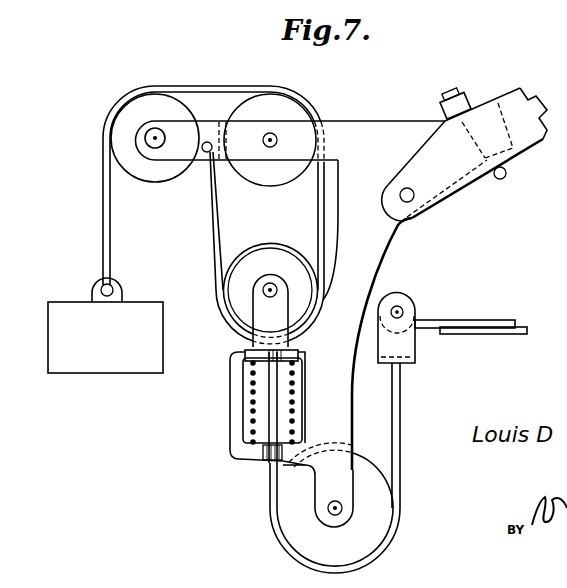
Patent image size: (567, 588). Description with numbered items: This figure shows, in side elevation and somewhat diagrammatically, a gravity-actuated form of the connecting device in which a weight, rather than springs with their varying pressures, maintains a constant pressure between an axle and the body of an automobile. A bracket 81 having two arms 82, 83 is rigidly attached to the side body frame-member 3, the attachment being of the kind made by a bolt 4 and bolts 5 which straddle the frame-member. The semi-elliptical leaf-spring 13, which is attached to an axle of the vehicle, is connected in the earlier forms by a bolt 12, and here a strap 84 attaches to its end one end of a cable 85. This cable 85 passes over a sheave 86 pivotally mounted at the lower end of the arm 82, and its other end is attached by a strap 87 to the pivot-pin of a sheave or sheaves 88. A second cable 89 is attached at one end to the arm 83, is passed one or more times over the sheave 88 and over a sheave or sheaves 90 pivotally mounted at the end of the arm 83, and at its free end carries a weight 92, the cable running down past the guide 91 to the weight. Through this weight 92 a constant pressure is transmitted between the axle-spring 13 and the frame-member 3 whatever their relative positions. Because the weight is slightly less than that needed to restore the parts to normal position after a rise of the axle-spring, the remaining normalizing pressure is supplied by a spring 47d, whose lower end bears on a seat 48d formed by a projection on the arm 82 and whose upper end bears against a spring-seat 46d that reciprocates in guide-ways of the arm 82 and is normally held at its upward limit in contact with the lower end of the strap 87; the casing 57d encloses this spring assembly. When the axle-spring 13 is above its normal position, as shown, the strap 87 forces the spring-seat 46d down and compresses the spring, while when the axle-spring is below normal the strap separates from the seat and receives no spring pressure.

The side body frame-member 3 is at (530, 123).
The bolt 4 is at (411, 193).
The bolts 5 is at (458, 100).
The bolt 12 is at (412, 310).
The semi-elliptical spring 13 is at (498, 320).
The spring-seat 46d is at (303, 357).
The spring 47d is at (252, 399).
The seat 48d is at (260, 447).
The guide casing 57d is at (300, 343).
The bracket 81 is at (354, 132).
The arm 82 is at (358, 268).
The arm 83 is at (172, 131).
The strap 84 is at (405, 341).
The cable 85 is at (402, 398).
The sheave 86 is at (368, 505).
The strap 87 is at (266, 316).
The sheave 88 is at (240, 292).
The second cable 89 is at (106, 207).
The sheave 90 is at (286, 112).
The pulley 91 is at (125, 113).
The weight 92 is at (105, 325).